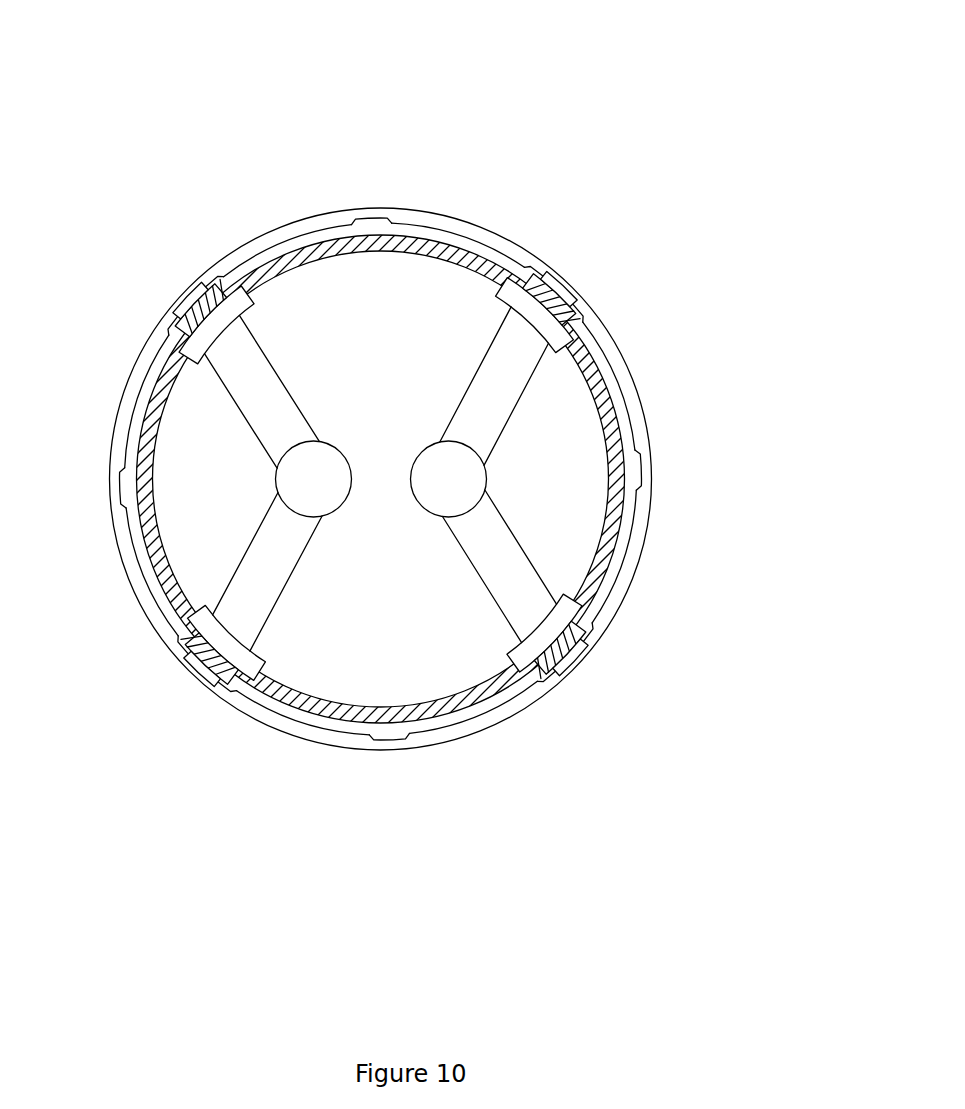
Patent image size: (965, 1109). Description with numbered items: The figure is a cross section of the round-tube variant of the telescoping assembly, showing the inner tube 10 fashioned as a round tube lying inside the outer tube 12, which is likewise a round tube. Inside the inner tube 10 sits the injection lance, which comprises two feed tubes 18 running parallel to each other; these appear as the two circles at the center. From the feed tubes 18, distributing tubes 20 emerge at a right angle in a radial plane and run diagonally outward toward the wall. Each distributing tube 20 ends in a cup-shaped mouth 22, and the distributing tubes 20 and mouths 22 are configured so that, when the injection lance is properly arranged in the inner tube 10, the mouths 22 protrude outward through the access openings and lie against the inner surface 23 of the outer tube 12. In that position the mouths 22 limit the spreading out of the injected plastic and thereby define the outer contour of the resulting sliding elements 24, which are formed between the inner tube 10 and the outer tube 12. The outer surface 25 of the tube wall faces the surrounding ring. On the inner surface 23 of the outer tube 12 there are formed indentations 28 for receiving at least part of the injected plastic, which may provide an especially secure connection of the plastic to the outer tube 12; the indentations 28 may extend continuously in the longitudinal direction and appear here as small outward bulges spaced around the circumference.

The inner tube 10 is at (302, 222).
The outer tube 12 is at (331, 213).
The feed tubes 18 is at (447, 472).
The distributing tubes 20 is at (497, 547).
The mouths 22 is at (213, 300).
The inner surface 23 is at (604, 369).
The sliding elements 24 is at (190, 295).
The outer surface 25 is at (610, 570).
The indentations 28 is at (392, 210).